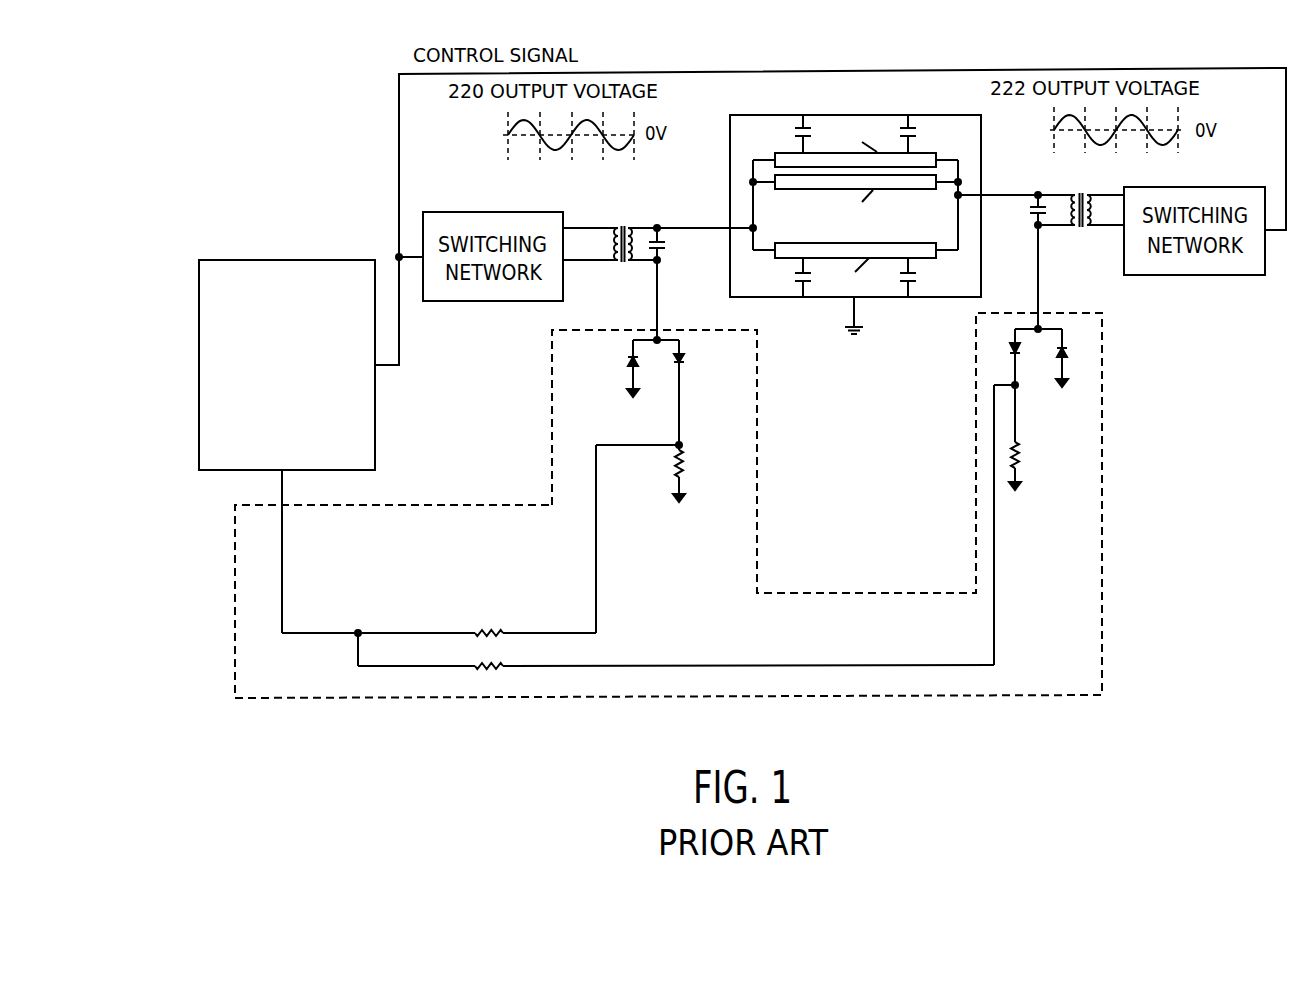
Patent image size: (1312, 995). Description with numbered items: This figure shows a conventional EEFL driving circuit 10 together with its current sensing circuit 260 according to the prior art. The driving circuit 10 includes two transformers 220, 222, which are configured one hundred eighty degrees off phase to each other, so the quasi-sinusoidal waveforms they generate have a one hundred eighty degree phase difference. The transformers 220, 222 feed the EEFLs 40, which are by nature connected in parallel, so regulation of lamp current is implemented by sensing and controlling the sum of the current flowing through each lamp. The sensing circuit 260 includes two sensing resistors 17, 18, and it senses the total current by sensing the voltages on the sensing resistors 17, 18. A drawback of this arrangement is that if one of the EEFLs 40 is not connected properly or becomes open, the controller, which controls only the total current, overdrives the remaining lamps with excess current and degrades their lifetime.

The EEFL driving circuit 10 is at (291, 80).
The EEFLs 40 is at (862, 114).
The transformer 220 is at (626, 226).
The transformer 222 is at (1084, 228).
The sensing resistor 18 is at (687, 464).
The sensing resistor 17 is at (1025, 455).
The current sensing circuit 260 is at (697, 505).